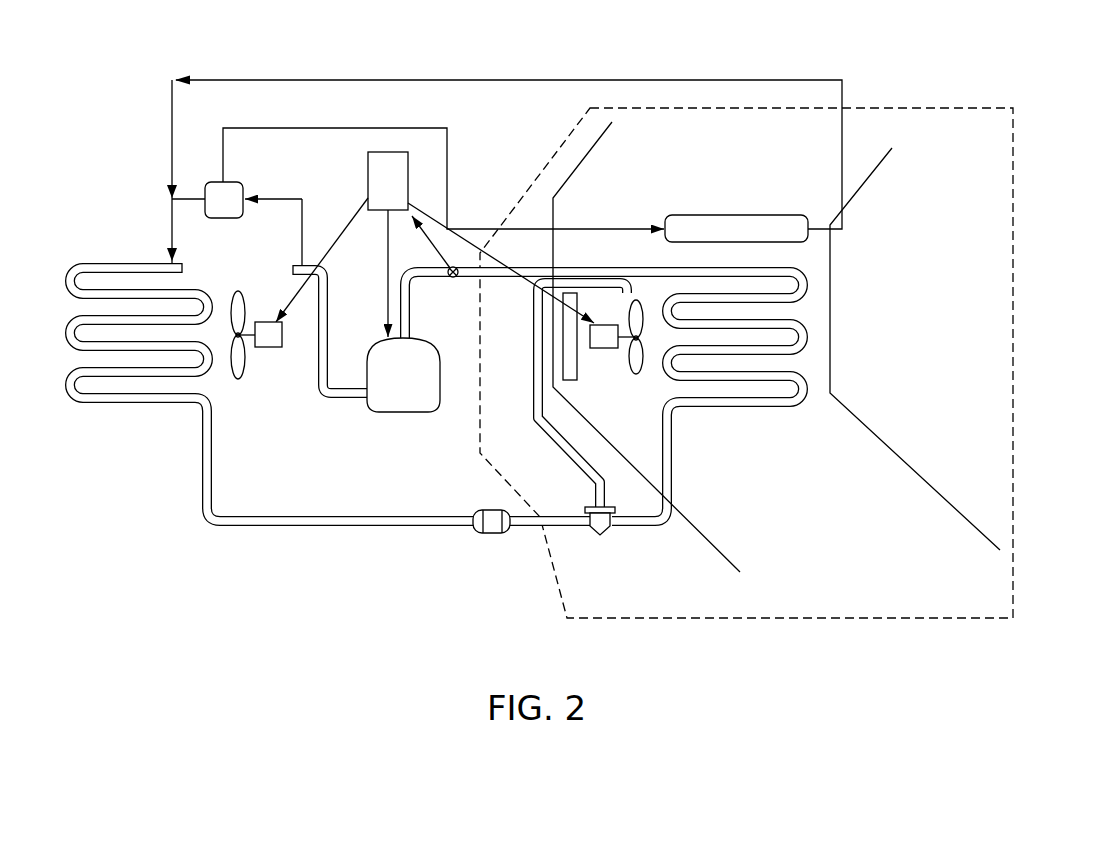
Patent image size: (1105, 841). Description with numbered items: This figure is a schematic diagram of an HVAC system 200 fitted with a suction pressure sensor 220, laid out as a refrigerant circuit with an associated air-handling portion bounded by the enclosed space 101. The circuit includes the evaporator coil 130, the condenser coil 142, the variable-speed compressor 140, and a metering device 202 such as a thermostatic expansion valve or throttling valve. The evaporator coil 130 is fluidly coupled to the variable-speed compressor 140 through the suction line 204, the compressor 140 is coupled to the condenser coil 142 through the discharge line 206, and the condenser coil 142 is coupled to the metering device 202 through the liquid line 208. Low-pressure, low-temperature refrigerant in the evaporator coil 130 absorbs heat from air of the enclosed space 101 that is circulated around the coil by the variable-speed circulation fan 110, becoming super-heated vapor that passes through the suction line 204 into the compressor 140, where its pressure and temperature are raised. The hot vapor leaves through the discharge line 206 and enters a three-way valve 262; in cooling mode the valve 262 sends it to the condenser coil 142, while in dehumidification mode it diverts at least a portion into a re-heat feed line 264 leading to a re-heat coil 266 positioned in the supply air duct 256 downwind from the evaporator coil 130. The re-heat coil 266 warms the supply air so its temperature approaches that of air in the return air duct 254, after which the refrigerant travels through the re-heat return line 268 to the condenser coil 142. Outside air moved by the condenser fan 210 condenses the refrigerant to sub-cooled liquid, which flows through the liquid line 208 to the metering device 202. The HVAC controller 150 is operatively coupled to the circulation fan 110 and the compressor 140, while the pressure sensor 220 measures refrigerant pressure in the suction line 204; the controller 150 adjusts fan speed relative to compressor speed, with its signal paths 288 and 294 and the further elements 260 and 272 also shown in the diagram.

The enclosed space 101 is at (1016, 375).
The variable-speed circulation fan 110 is at (605, 326).
The evaporator coil 130 is at (778, 408).
The variable-speed compressor 140 is at (400, 413).
The condenser coil 142 is at (128, 405).
The HVAC controller 150 is at (368, 155).
The refrigeration system 200 is at (120, 236).
The metering device 202 is at (600, 537).
The suction line 204 is at (433, 280).
The discharge line 206 is at (328, 272).
The liquid line 208 is at (330, 528).
The condenser fan 210 is at (272, 348).
The pressure sensor 220 is at (457, 278).
The return air duct 254 is at (712, 550).
The supply air duct 256 is at (855, 198).
The supply line 260 is at (845, 95).
The three-way valve 262 is at (201, 182).
The re-heat feed line 264 is at (325, 127).
The re-heat coil 266 is at (803, 246).
The re-heat return line 268 is at (515, 79).
The damper 272 is at (578, 313).
The control signal line to evaporator fan 288 is at (337, 238).
The control signal line to tank 294 is at (386, 300).